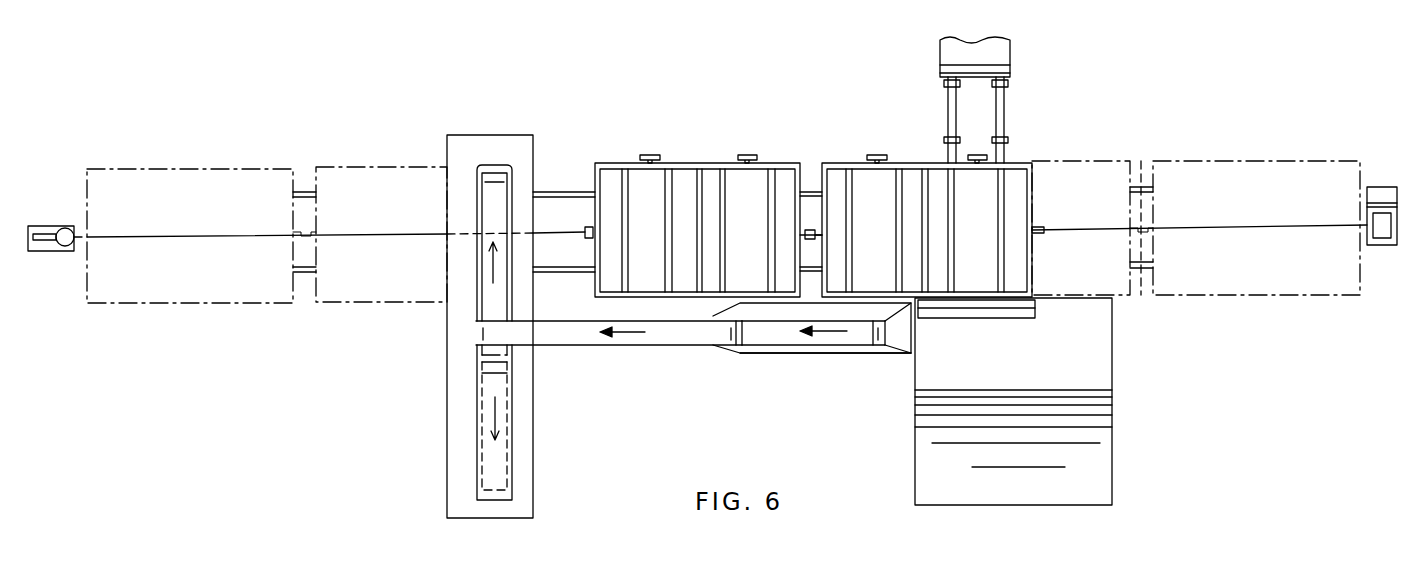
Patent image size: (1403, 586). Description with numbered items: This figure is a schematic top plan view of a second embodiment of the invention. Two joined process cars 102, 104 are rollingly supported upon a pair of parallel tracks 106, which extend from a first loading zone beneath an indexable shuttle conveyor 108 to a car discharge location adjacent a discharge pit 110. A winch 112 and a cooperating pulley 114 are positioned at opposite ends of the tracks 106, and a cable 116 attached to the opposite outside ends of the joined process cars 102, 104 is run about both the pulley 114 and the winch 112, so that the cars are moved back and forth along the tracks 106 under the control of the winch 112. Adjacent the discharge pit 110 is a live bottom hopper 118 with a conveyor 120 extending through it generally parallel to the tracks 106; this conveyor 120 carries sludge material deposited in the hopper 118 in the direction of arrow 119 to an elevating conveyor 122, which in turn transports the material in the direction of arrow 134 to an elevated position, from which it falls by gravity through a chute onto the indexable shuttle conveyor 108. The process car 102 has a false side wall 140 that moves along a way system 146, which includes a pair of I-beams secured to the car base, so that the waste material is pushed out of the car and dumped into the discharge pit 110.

The process car 102 is at (705, 163).
The process car 104 is at (910, 162).
The tracks 106 is at (1143, 185).
The indexable shuttle conveyor 108 is at (480, 392).
The discharge pit 110 is at (1037, 379).
The winch 112 is at (1380, 187).
The pulley 114 is at (50, 226).
The cable 116 is at (230, 237).
The live bottom hopper 118 is at (858, 350).
The arrow 119 is at (828, 332).
The conveyor 120 is at (785, 335).
The elevating conveyor 122 is at (677, 338).
The arrow 134 is at (630, 333).
The false side wall 140 is at (678, 163).
The way system 146 is at (1005, 210).